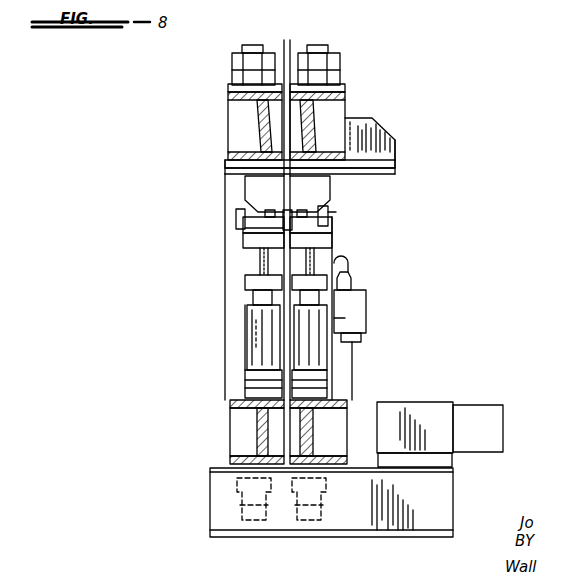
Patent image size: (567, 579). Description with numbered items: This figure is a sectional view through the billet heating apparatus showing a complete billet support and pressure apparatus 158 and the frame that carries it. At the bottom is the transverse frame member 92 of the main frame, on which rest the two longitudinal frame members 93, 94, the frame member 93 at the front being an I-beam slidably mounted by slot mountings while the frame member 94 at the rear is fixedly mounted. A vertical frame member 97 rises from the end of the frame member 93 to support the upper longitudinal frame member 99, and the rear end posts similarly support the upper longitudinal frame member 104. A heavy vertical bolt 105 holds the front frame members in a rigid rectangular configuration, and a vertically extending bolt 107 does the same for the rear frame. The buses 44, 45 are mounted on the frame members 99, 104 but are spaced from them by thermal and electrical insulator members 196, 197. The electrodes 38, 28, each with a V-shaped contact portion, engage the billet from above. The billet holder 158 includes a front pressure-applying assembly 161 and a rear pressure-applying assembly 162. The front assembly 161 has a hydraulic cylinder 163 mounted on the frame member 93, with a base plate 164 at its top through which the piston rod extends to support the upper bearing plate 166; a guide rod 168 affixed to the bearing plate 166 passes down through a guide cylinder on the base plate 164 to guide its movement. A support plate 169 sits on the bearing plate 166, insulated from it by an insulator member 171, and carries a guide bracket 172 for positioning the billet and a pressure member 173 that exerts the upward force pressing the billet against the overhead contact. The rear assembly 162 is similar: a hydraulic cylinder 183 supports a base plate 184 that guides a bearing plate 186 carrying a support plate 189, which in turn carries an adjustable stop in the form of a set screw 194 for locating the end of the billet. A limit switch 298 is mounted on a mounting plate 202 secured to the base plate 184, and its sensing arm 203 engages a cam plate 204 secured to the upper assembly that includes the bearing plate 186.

The vertical bolt 105 is at (253, 46).
The vertically extending bolt 107 is at (326, 48).
The longitudinal frame member 104 is at (340, 106).
The longitudinal frame member 99 is at (240, 108).
The insulator member 196 is at (226, 164).
The insulator member 197 is at (396, 152).
The bus 44 is at (228, 166).
The bus 45 is at (396, 168).
The electrode 38 is at (246, 186).
The electrode 28 is at (330, 192).
The pressure member 173 is at (283, 218).
The set screw 194 is at (330, 216).
The guide bracket 172 is at (236, 218).
The support plate 169 is at (266, 228).
The support plate 189 is at (320, 222).
The insulator member 171 is at (250, 236).
The bearing plate 186 is at (326, 242).
The billet support and pressure apparatus 158 is at (340, 250).
The upper bearing plate 166 is at (264, 265).
The cam plate 204 is at (350, 262).
The sensing arm 203 is at (352, 282).
The guide rod 168 is at (252, 282).
The base plate 184 is at (366, 306).
The base plate 164 is at (246, 290).
The rear pressure-applying assembly 162 is at (346, 318).
The front pressure-applying assembly 161 is at (243, 300).
The limit switch 298 is at (362, 333).
The mounting plate 202 is at (354, 350).
The vertical frame member 97 is at (236, 353).
The hydraulic cylinder 183 is at (325, 368).
The hydraulic cylinder 163 is at (252, 378).
The longitudinal frame member 94 is at (330, 442).
The longitudinal frame member 93 is at (244, 436).
The transverse frame member 92 is at (226, 505).